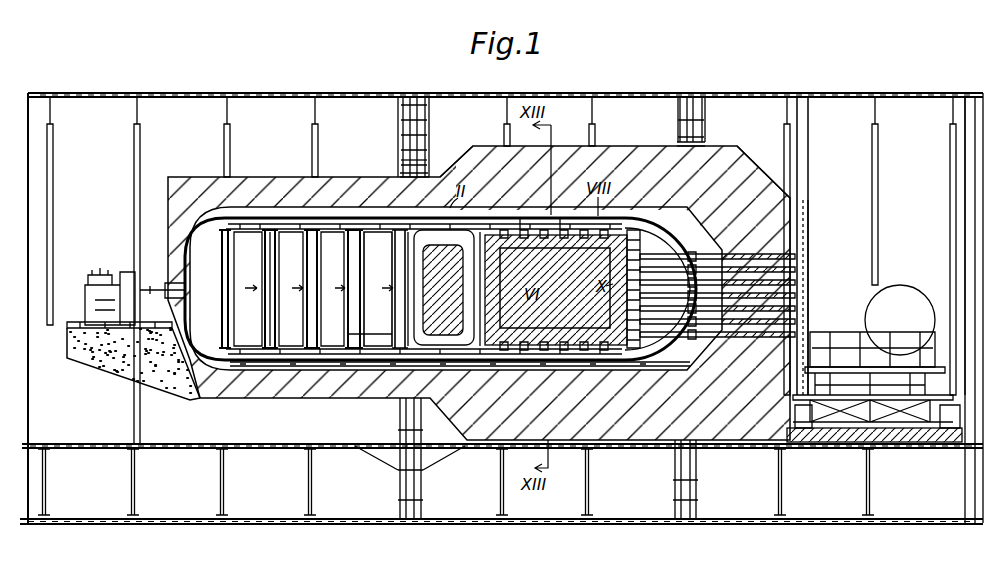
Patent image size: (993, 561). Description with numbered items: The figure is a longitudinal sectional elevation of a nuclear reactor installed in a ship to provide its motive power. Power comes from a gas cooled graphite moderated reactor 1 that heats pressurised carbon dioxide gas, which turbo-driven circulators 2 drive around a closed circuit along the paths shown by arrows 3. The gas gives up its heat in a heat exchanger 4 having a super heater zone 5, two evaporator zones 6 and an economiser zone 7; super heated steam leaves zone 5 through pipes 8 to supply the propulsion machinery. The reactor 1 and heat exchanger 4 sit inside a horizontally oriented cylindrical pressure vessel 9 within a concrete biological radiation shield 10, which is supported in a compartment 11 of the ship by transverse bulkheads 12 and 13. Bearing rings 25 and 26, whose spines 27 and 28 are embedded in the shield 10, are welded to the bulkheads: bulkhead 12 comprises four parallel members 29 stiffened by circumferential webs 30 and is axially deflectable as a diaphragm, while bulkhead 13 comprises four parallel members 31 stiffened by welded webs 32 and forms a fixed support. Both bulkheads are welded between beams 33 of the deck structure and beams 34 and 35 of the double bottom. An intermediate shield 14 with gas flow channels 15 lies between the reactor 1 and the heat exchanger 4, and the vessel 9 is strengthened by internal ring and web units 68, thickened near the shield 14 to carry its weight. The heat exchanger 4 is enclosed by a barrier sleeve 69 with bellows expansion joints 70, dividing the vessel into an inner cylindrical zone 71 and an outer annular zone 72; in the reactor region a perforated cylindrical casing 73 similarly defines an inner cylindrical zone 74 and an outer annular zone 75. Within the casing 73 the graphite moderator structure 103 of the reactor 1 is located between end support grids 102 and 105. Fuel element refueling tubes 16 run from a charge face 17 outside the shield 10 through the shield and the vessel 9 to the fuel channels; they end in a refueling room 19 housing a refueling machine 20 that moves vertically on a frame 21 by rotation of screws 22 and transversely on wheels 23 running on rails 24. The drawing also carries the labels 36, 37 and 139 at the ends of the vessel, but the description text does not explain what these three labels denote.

The reactor 1 is at (569, 307).
The turbo-driven circulators 2 is at (170, 284).
The arrows 3 is at (214, 274).
The heat exchanger 4 is at (290, 232).
The super heater zone 5 is at (379, 285).
The evaporator zones 6 is at (295, 283).
The economiser zone 7 is at (248, 283).
The pipes 8 is at (350, 336).
The pressure vessel 9 is at (366, 225).
The biological radiation shield 10 is at (245, 178).
The compartment 11 is at (200, 432).
The bulkhead 12 is at (400, 110).
The bulkhead 13 is at (684, 97).
The intermediate shield 14 is at (412, 305).
The channels 15 is at (444, 287).
The fuel element refueling tubes 16 is at (788, 242).
The charge face 17 is at (802, 223).
The refueling room 19 is at (924, 196).
The refueling machine 20 is at (872, 325).
The frame 21 is at (851, 425).
The screws 22 is at (792, 262).
The wheels 23 is at (808, 398).
The rails 24 is at (945, 428).
The bearing ring 25 is at (404, 160).
The bearing ring 26 is at (703, 143).
The spines 27 is at (404, 176).
The spines 28 is at (678, 156).
The parallel members 29 is at (403, 100).
The circumferential webs 30 is at (427, 146).
The parallel members 31 is at (705, 109).
The welded webs 32 is at (678, 117).
The beams 33 is at (782, 92).
The beams 34 is at (832, 442).
The beams 35 is at (709, 519).
The chamber shell 36 is at (188, 246).
The end wall 37 is at (657, 319).
The ring and web units 68 is at (560, 230).
The barrier sleeve 69 is at (240, 289).
The bellows expansion joints 70 is at (325, 289).
The inner cylindrical zone 71 is at (270, 226).
The outer annular zone 72 is at (352, 226).
The perforated cylindrical casing 73 is at (535, 259).
The inner cylindrical zone 74 is at (554, 290).
The outer annular zone 75 is at (520, 230).
The end support grid 102 is at (482, 366).
The graphite moderator structure 103 is at (572, 364).
The end support grid 105 is at (605, 335).
The end wall 139 is at (657, 257).